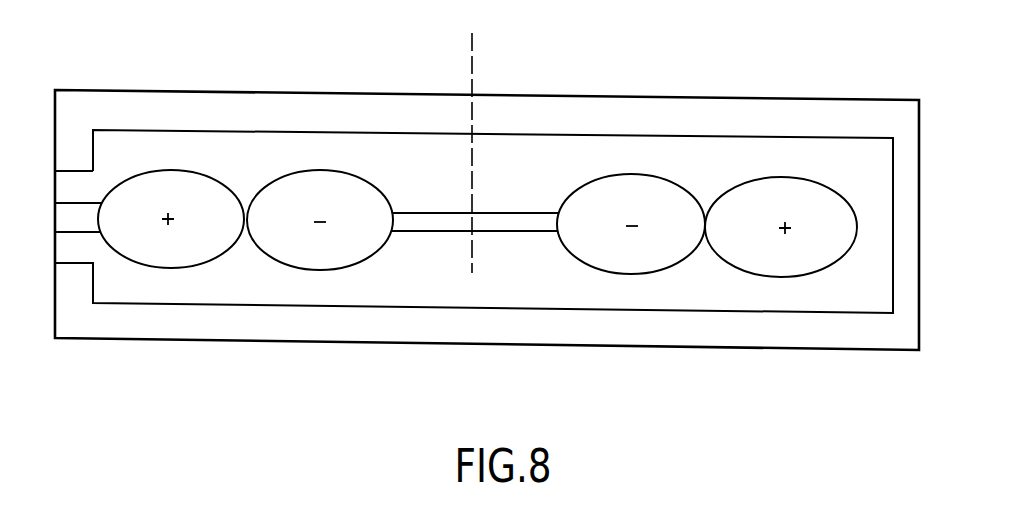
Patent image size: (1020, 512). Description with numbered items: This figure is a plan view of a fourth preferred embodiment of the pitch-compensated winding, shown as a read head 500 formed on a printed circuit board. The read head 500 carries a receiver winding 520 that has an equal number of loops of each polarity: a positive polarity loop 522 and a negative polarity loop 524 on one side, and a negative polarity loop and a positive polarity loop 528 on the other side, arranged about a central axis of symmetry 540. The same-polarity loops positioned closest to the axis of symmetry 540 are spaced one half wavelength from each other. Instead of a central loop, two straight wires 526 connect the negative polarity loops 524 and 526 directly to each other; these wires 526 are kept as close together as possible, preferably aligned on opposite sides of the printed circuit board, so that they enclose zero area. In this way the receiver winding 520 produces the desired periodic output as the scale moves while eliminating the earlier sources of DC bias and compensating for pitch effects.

The read head 500 is at (651, 72).
The receiver winding 520 is at (272, 152).
The positive polarity loop 522 is at (187, 268).
The negative polarity loop 524 is at (347, 270).
The straight wires 526 is at (421, 213).
The positive polarity loop 528 is at (808, 277).
The axis of symmetry 540 is at (473, 80).